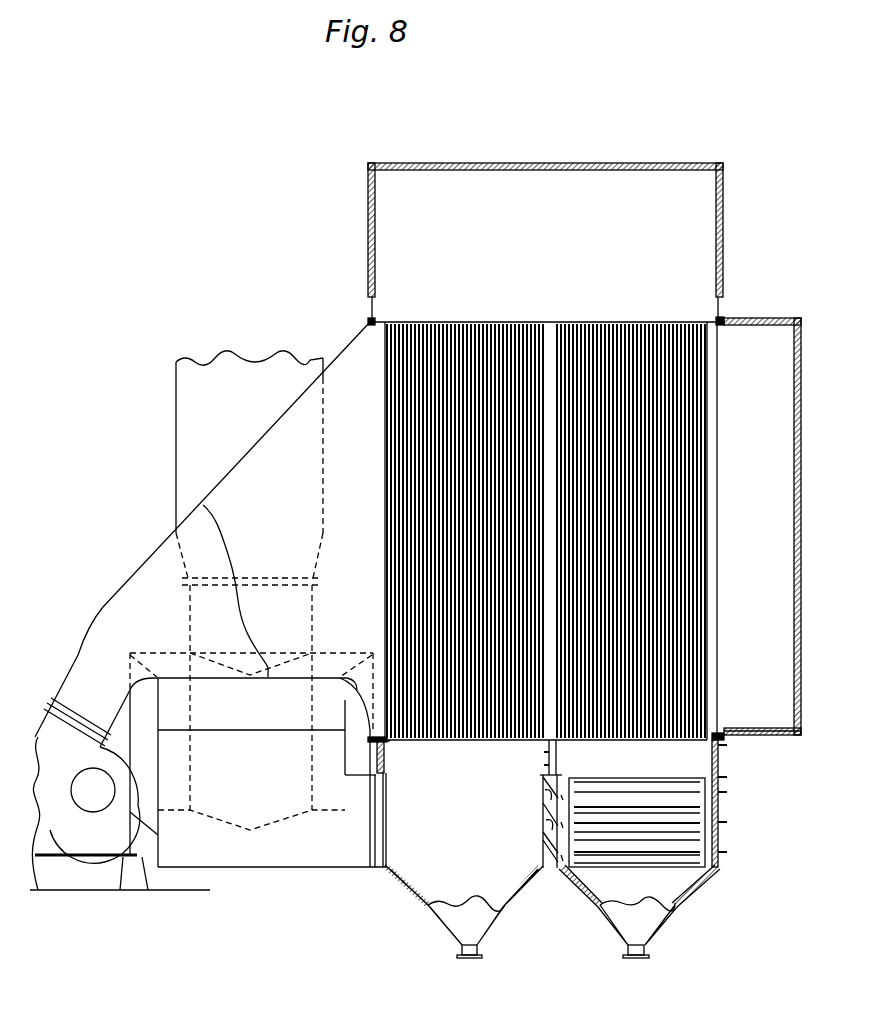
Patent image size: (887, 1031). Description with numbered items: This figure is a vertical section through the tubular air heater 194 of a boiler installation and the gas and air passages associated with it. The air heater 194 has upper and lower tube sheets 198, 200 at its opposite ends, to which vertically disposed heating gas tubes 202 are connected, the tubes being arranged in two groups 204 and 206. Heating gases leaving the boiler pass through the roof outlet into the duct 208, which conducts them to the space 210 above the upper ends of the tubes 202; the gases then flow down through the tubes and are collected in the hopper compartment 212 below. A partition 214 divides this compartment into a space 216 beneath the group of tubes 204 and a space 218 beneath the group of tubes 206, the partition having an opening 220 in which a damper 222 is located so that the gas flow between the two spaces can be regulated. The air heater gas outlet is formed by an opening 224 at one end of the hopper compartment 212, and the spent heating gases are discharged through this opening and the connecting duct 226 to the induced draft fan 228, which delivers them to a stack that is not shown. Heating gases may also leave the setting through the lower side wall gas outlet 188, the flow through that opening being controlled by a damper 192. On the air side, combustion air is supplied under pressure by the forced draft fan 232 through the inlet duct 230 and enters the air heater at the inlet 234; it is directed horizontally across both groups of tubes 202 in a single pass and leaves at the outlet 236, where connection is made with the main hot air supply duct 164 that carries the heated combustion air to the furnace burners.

The main hot air supply duct 164 is at (760, 740).
The lower side wall gas outlet 188 is at (703, 807).
The damper 192 is at (700, 834).
The tubular air heater 194 is at (690, 375).
The upper tube sheet 198 is at (462, 322).
The lower tube sheet 200 is at (507, 740).
The heating gas tubes 202 is at (527, 333).
The group of tubes 204 is at (688, 548).
The group of tubes 206 is at (392, 532).
The duct 208 is at (560, 163).
The space above the upper ends of the air heater tubes 210 is at (547, 239).
The hopper compartment 212 is at (410, 897).
The partition 214 is at (557, 757).
The space below the group of tubes 204 216 is at (650, 771).
The space below the group of tubes 206 218 is at (482, 834).
The opening 220 is at (543, 830).
The damper 222 is at (543, 792).
The opening 224 is at (380, 833).
The connecting duct 226 is at (268, 867).
The induced draft fan 228 is at (314, 622).
The inlet duct 230 is at (137, 574).
The forced draft fan 232 is at (123, 872).
The inlet 234 is at (370, 509).
The outlet 236 is at (767, 477).